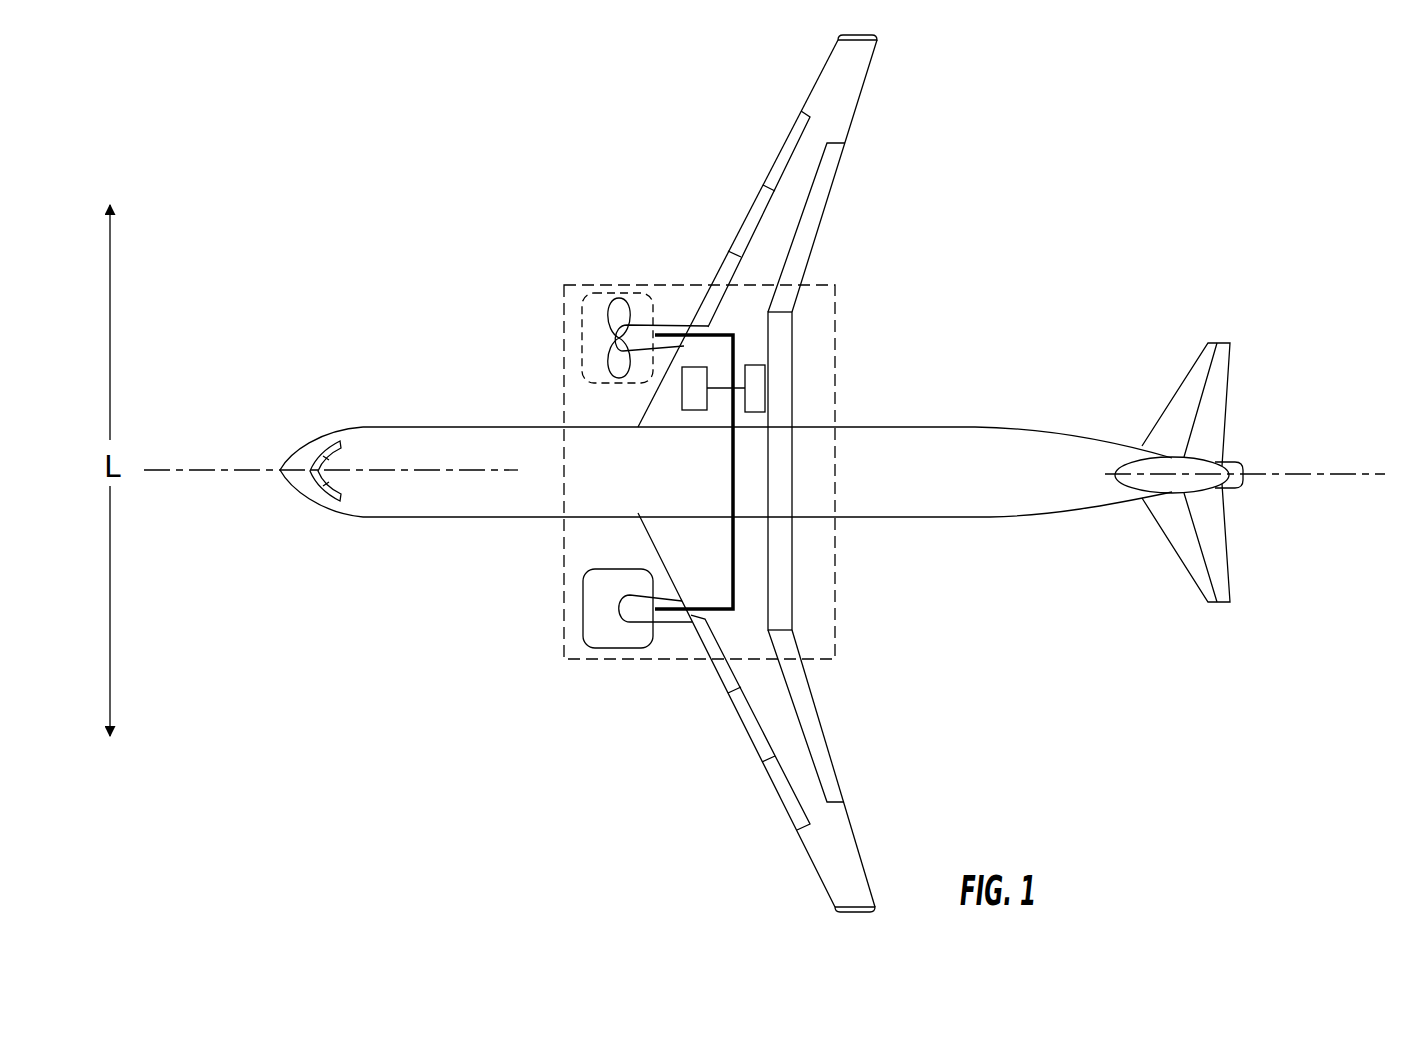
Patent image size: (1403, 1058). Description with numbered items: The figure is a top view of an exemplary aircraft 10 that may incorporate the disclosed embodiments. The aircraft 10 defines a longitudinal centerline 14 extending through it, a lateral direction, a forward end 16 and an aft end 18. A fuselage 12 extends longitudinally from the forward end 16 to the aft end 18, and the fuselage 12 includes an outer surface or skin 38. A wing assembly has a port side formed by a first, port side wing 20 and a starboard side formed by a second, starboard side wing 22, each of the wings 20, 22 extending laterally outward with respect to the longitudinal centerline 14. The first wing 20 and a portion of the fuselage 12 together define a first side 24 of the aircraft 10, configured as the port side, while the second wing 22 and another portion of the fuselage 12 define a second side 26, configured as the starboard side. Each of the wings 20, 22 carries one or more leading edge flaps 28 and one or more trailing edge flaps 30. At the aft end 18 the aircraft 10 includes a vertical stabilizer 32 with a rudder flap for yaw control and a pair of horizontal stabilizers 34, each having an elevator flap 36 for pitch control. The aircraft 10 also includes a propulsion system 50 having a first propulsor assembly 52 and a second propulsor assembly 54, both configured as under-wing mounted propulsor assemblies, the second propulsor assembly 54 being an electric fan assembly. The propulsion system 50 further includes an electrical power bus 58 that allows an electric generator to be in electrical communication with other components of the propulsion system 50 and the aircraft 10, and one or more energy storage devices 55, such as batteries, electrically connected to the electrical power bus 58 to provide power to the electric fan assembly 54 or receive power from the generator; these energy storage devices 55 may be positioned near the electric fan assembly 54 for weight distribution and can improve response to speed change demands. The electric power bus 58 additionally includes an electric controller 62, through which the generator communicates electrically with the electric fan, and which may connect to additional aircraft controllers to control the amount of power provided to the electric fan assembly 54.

The aircraft 10 is at (1013, 158).
The fuselage 12 is at (358, 499).
The longitudinal centerline 14 is at (209, 472).
The forward end 16 is at (273, 516).
The aft end 18 is at (1175, 592).
The first, port side wing 20 is at (765, 712).
The second, starboard side wing 22 is at (843, 92).
The first side 24 is at (602, 678).
The second side 26 is at (563, 260).
The leading edge flap 28 is at (748, 733).
The trailing edge flap 30 is at (827, 743).
The vertical stabilizer 32 is at (1238, 490).
The horizontal stabilizer 34 is at (1217, 445).
The elevator flap 36 is at (1218, 388).
The outer surface or skin 38 is at (960, 477).
The propulsion system 50 is at (720, 420).
The first propulsor assembly 52 is at (607, 623).
The second propulsor assembly 54 is at (687, 315).
The energy storage device 55 is at (766, 400).
The electrical power bus 58 is at (747, 355).
The electric controller 62 is at (680, 395).